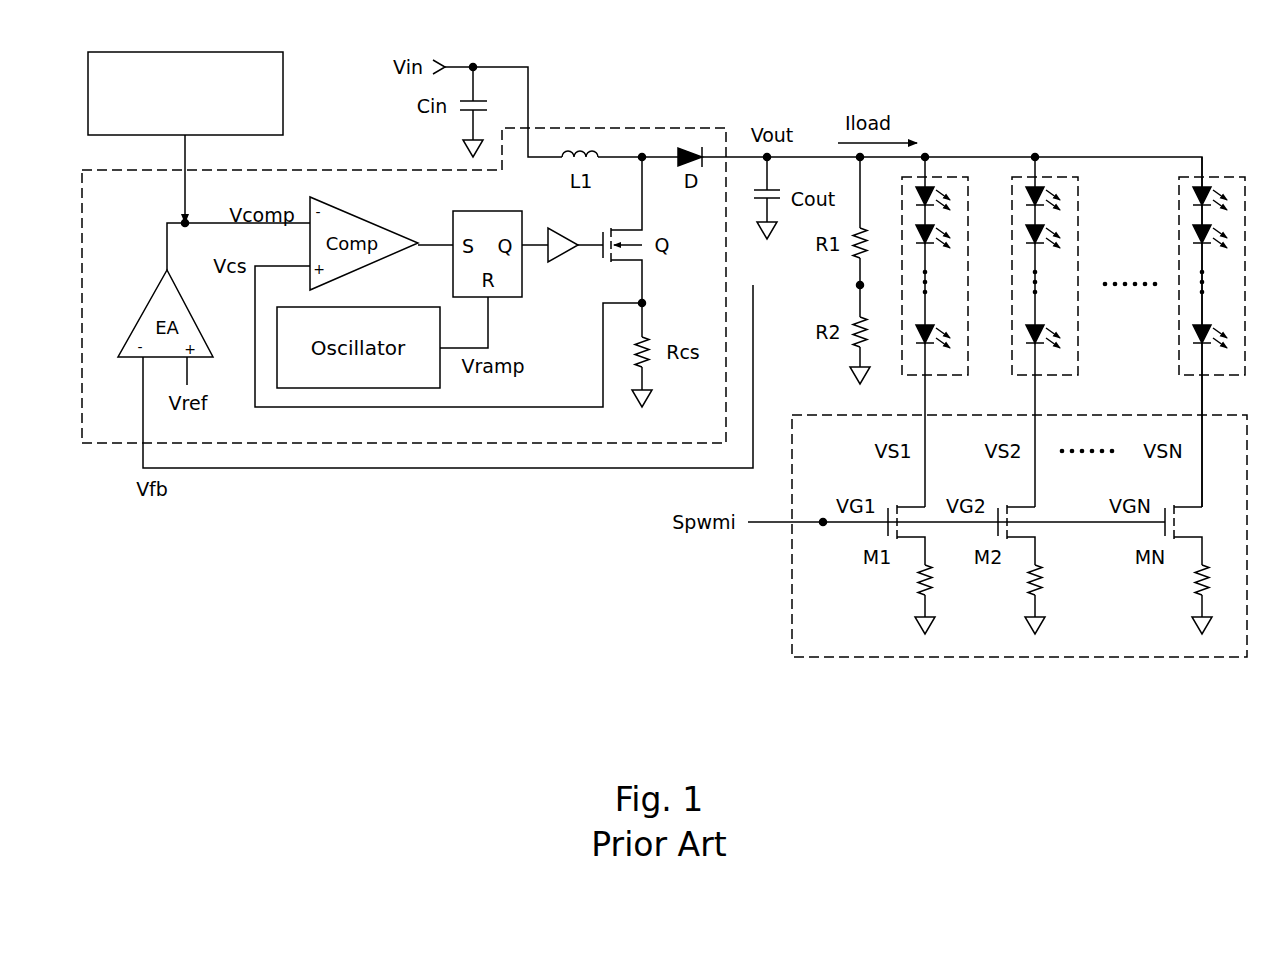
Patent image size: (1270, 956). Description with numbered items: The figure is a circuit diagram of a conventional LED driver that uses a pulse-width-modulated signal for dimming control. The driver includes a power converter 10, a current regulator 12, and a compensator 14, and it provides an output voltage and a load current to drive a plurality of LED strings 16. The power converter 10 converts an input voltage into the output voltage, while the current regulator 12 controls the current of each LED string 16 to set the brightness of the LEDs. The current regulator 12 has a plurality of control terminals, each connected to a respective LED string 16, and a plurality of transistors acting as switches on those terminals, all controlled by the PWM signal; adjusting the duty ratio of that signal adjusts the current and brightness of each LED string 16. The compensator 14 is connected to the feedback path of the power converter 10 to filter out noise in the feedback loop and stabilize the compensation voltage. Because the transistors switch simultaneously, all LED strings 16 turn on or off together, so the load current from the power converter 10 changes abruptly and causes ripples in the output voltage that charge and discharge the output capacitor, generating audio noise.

The power converter 10 is at (366, 170).
The current regulator 12 is at (792, 578).
The compensator 14 is at (285, 92).
The LED strings 16 is at (968, 226).